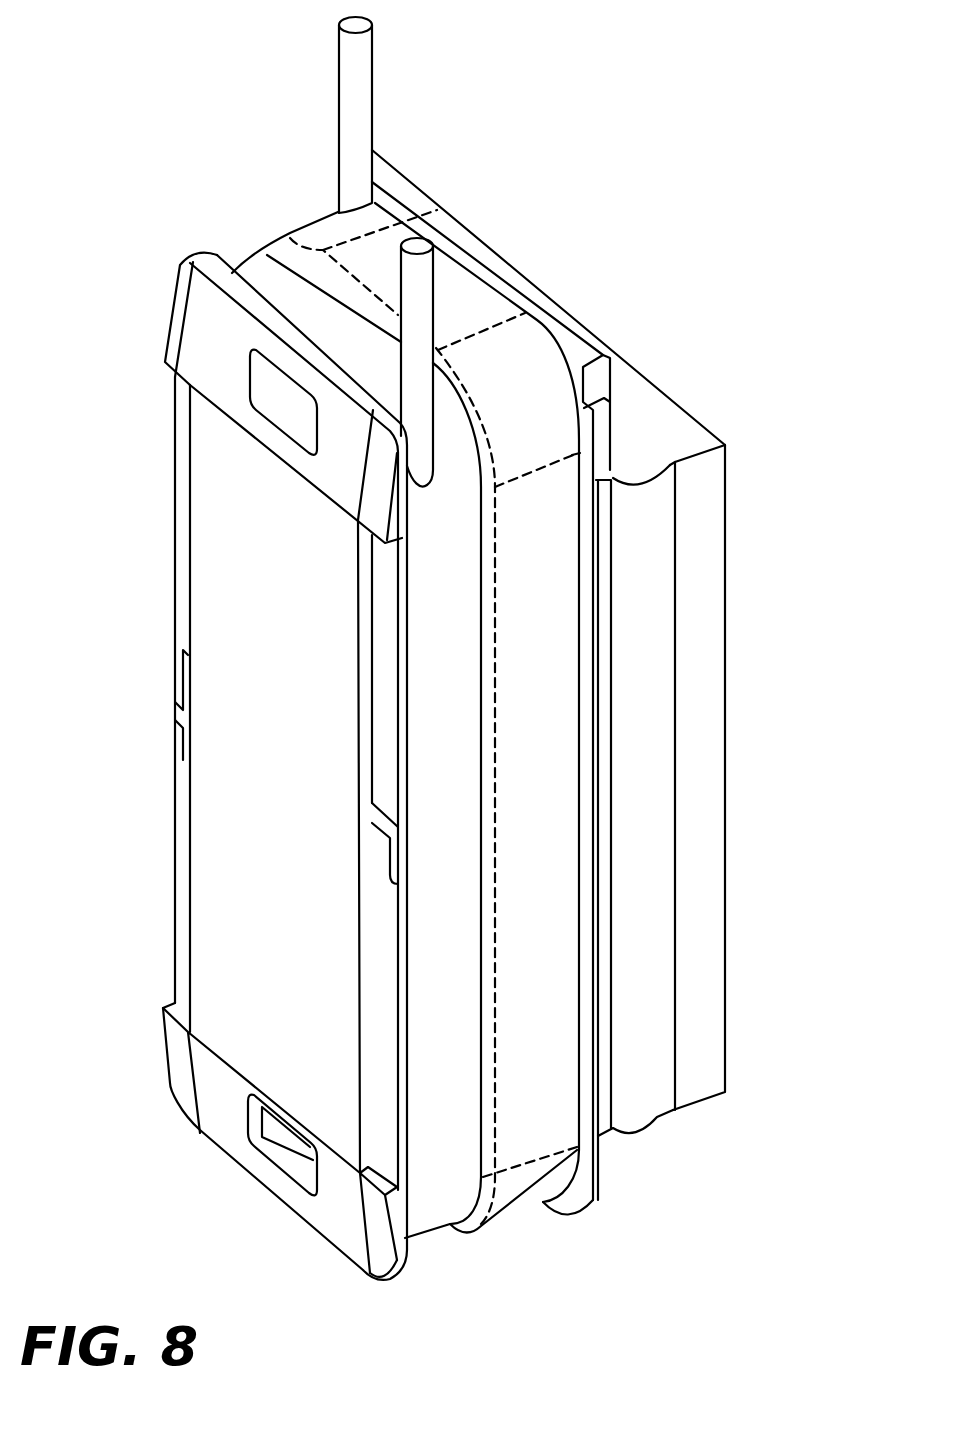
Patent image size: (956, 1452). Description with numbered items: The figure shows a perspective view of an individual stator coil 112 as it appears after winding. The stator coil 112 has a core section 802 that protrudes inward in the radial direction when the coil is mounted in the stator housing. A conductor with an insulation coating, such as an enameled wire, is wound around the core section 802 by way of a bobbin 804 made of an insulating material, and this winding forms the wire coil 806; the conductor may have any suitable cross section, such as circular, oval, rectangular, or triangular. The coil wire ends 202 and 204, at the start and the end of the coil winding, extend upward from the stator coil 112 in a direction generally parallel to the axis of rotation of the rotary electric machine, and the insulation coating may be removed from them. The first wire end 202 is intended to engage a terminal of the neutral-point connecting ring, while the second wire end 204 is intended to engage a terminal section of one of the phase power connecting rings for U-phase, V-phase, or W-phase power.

The stator coil 112 is at (174, 58).
The first wire end 202 is at (372, 80).
The second wire end 204 is at (434, 265).
The core section 802 is at (245, 792).
The bobbin 804 is at (597, 1203).
The wire coil 806 is at (490, 326).